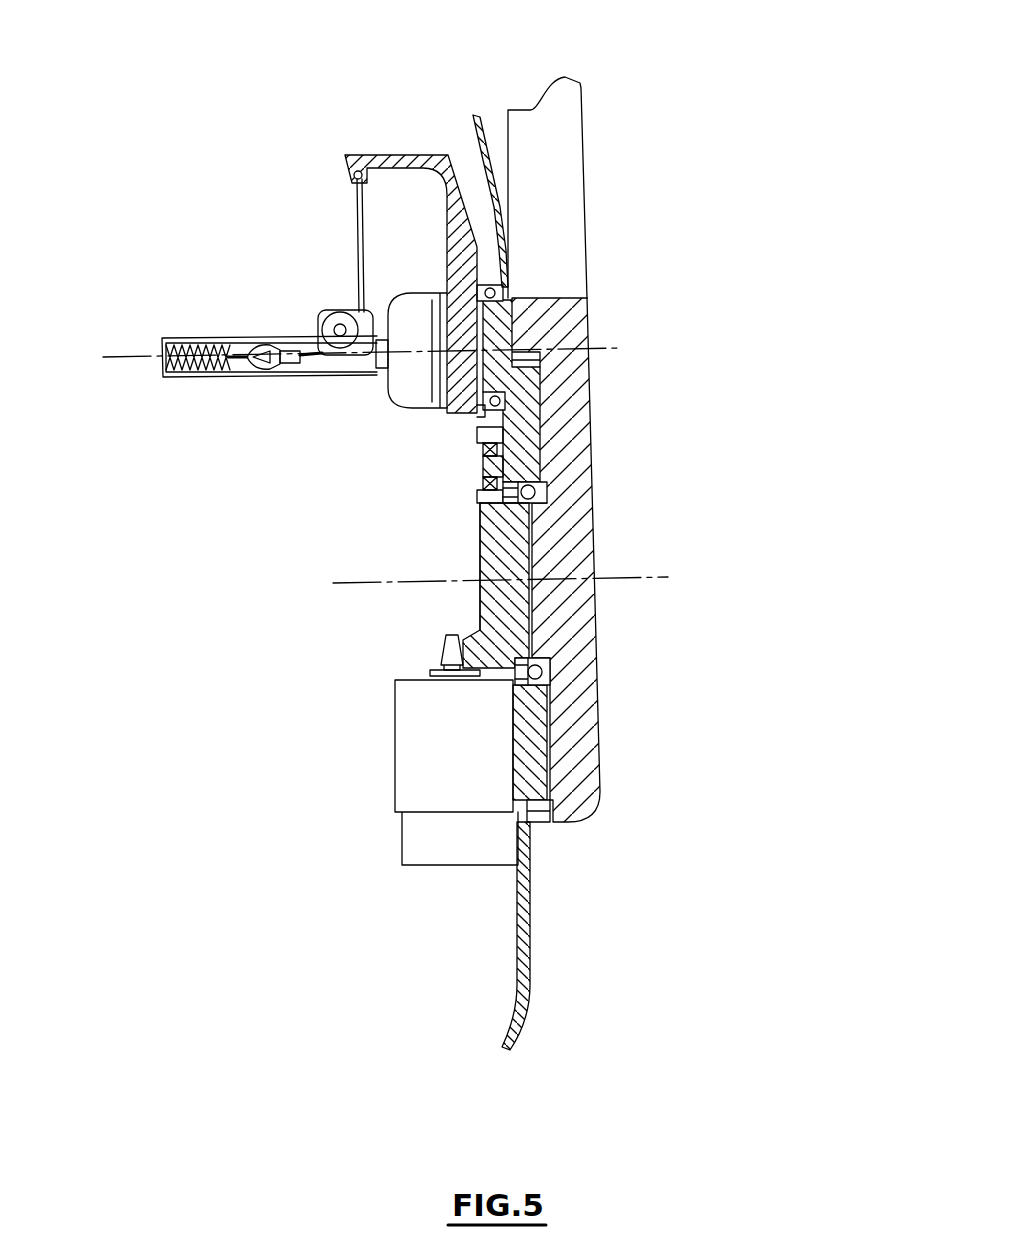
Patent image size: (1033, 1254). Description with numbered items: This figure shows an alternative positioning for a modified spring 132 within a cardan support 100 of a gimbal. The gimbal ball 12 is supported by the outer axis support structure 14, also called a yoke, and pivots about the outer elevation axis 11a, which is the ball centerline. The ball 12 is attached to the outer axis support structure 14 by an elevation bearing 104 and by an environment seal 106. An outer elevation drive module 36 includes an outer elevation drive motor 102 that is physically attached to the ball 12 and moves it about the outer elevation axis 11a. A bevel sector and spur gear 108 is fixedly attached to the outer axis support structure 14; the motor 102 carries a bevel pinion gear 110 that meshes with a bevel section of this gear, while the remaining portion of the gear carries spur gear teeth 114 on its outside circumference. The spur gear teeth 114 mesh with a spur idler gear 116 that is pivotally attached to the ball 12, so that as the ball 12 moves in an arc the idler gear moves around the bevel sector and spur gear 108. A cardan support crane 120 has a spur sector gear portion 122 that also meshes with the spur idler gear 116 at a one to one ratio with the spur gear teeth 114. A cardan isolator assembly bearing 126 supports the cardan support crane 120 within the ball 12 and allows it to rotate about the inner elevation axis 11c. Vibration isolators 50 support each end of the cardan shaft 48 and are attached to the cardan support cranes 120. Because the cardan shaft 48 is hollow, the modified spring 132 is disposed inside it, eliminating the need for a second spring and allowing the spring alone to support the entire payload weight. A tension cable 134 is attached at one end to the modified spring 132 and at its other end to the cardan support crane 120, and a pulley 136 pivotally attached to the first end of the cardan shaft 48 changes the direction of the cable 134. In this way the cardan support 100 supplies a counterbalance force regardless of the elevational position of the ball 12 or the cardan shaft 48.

The cardan support 100 is at (675, 72).
The gimbal ball 12 is at (477, 113).
The outer axis support structure 14 is at (587, 225).
The outer elevation drive module 36 is at (593, 465).
The cardan shaft 48 is at (230, 338).
The vibration isolators 50 is at (420, 285).
The outer elevation drive motor 102 is at (395, 765).
The elevation bearing 104 is at (550, 678).
The environment seal 106 is at (580, 343).
The bevel sector and spur gear 108 is at (513, 603).
The bevel pinion gear 110 is at (438, 650).
The spur gear teeth 114 is at (480, 543).
The spur idler gear 116 is at (480, 483).
The cardan support crane 120 is at (410, 150).
The spur sector gear portion 122 is at (473, 432).
The cardan isolator assembly bearing 126 is at (503, 287).
The modified spring 132 is at (182, 337).
The tension cable 134 is at (312, 345).
The pulley 136 is at (335, 307).
The outer elevation axis 11a is at (645, 577).
The inner elevation axis 11c is at (115, 357).